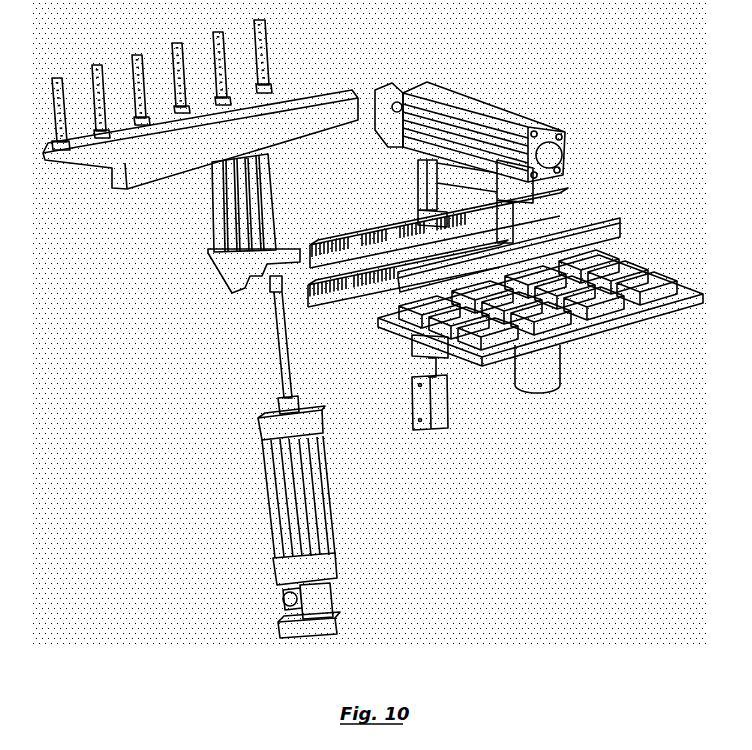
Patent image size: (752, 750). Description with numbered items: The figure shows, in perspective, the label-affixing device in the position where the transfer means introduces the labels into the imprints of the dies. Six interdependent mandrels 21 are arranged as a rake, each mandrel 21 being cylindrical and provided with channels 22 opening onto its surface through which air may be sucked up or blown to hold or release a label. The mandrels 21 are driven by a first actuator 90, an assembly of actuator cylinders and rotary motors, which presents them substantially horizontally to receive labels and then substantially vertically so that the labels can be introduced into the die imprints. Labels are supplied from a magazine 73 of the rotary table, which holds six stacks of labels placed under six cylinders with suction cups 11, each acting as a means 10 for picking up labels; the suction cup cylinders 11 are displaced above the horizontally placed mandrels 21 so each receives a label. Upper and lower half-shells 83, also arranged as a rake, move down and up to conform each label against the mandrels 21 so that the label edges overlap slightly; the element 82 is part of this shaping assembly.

The means for picking up labels 10 is at (578, 93).
The cylinders with suction cups 11 is at (618, 243).
The mandrels 21 is at (258, 32).
The channels 22 is at (264, 71).
The magazine 73 is at (673, 268).
The comb rail 82 is at (418, 242).
The half-shells 83 is at (353, 192).
The first actuator 90 is at (208, 433).